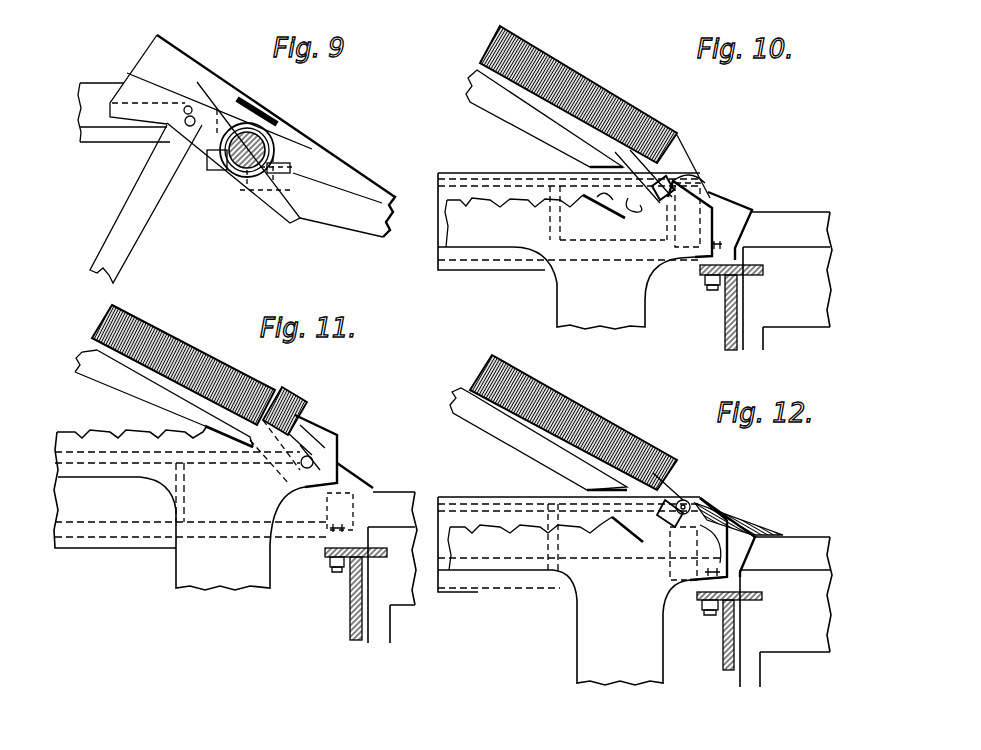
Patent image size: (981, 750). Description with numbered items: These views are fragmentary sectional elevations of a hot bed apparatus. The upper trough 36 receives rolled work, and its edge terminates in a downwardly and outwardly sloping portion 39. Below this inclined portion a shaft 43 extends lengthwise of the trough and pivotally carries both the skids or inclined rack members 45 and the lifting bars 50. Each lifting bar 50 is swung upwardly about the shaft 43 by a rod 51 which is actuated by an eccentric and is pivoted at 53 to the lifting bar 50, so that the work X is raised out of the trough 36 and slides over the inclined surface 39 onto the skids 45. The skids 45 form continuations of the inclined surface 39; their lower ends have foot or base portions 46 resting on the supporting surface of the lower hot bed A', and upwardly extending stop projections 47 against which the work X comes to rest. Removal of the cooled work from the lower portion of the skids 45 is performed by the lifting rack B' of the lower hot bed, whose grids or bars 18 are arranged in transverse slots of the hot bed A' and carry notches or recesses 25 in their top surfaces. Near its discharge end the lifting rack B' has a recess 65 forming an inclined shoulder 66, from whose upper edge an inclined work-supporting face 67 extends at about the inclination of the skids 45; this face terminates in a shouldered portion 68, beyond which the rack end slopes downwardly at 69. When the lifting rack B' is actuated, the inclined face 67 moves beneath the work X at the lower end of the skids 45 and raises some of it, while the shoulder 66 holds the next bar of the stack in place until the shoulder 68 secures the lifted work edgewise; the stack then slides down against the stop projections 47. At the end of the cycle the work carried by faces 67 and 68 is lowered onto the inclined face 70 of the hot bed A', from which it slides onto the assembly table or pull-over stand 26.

In FIG. 10, the grids or bars 18 is at (647, 305).
In FIG. 11, the grids or bars 18 is at (238, 588).
In FIG. 12, the grids or bars 18 is at (578, 668).
In FIG. 10, the notches or recesses 25 is at (466, 200).
In FIG. 11, the notches or recesses 25 is at (130, 428).
In FIG. 12, the notches or recesses 25 is at (485, 525).
In FIG. 10, the assembly table or pull-over stand 26 is at (822, 212).
In FIG. 11, the assembly table or pull-over stand 26 is at (413, 492).
In FIG. 12, the assembly table or pull-over stand 26 is at (802, 537).
In FIG. 9, the trough 36 is at (130, 62).
In FIG. 9, the downwardly and outwardly sloping portions 39 is at (295, 140).
In FIG. 9, the shafts 43 is at (275, 135).
In FIG. 9, the skids or inclined rack members 45 is at (390, 198).
In FIG. 10, the skids or inclined rack members 45 is at (473, 88).
In FIG. 11, the skids or inclined rack members 45 is at (112, 362).
In FIG. 12, the skids or inclined rack members 45 is at (470, 393).
In FIG. 10, the foot or base portions 46 is at (592, 165).
In FIG. 12, the foot or base portions 46 is at (585, 468).
In FIG. 10, the stop projections 47 is at (672, 168).
In FIG. 11, the stop projections 47 is at (300, 425).
In FIG. 12, the stop projections 47 is at (735, 512).
In FIG. 9, the lifting bars 50 is at (188, 58).
In FIG. 9, the rods 51 is at (123, 202).
In FIG. 9, the pivot 53 is at (158, 143).
In FIG. 10, the recesses 65 is at (603, 195).
In FIG. 11, the recesses 65 is at (205, 425).
In FIG. 12, the recesses 65 is at (617, 527).
In FIG. 10, the shoulders 66 is at (640, 210).
In FIG. 11, the shoulders 66 is at (283, 388).
In FIG. 12, the shoulders 66 is at (672, 500).
In FIG. 10, the inclined work-supporting faces 67 is at (678, 170).
In FIG. 11, the inclined work-supporting faces 67 is at (340, 436).
In FIG. 12, the inclined work-supporting faces 67 is at (690, 500).
In FIG. 10, the shouldered portions 68 is at (690, 173).
In FIG. 11, the shouldered portions 68 is at (305, 430).
In FIG. 12, the shouldered portions 68 is at (690, 490).
In FIG. 10, the downward slope 69 is at (712, 186).
In FIG. 11, the downward slope 69 is at (300, 432).
In FIG. 12, the downward slope 69 is at (690, 525).
In FIG. 10, the inclined face 70 is at (755, 213).
In FIG. 11, the inclined face 70 is at (350, 478).
In FIG. 12, the inclined face 70 is at (742, 562).
In FIG. 9, the work X is at (250, 100).
In FIG. 10, the work X is at (612, 97).
In FIG. 11, the work X is at (183, 347).
In FIG. 12, the work X is at (620, 422).
In FIG. 10, the hot bed A' is at (497, 289).
In FIG. 11, the hot bed A' is at (117, 567).
In FIG. 12, the hot bed A' is at (504, 612).
In FIG. 10, the lifting rack B' is at (606, 288).
In FIG. 11, the lifting rack B' is at (220, 490).
In FIG. 12, the lifting rack B' is at (616, 620).